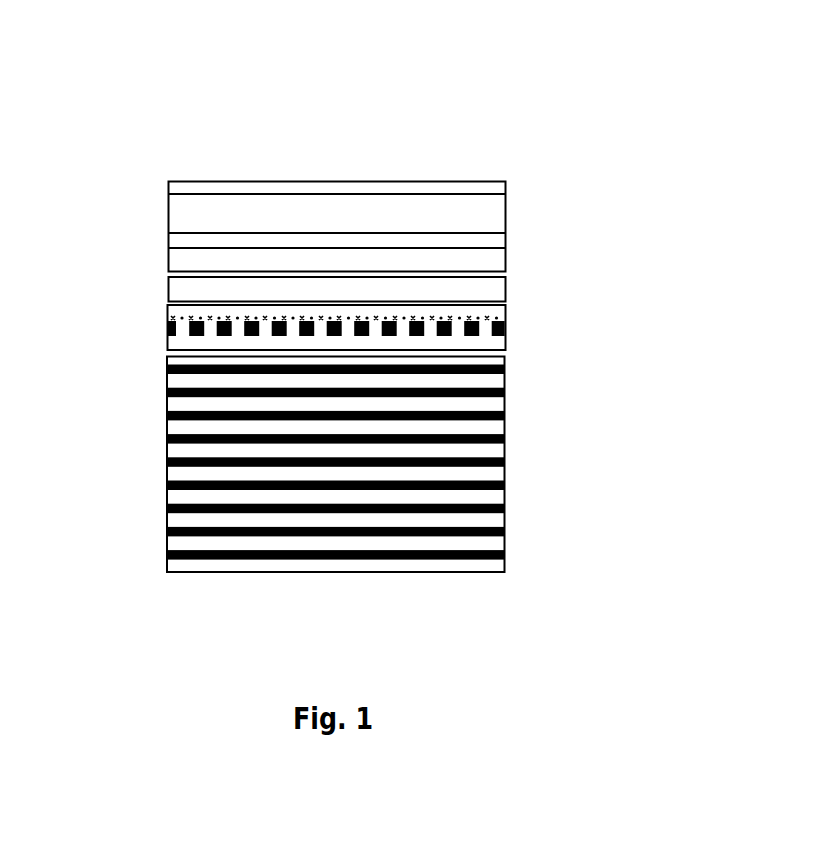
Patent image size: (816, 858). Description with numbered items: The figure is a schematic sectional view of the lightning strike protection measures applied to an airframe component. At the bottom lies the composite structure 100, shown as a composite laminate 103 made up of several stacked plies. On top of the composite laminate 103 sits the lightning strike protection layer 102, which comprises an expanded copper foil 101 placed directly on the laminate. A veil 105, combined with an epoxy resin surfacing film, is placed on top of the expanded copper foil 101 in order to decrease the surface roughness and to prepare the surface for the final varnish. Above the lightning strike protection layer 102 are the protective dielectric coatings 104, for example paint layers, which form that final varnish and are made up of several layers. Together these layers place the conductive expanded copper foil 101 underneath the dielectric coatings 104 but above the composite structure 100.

The composite structure 100 is at (577, 152).
The expanded copper foil 101 is at (505, 330).
The lightning strike protection layer 102 is at (152, 305).
The composite laminate 103 is at (147, 581).
The protective dielectric coatings 104 is at (147, 296).
The veil 105 is at (493, 318).